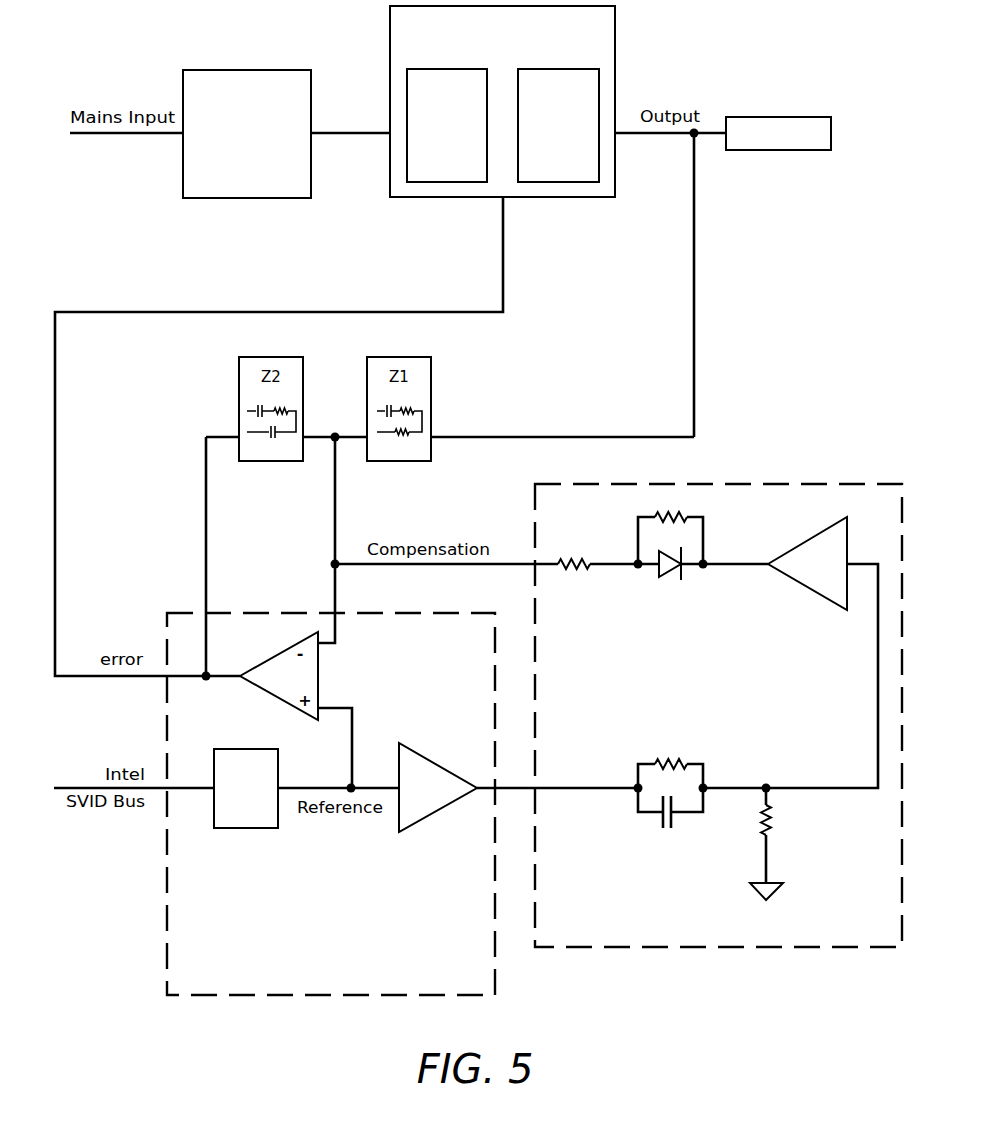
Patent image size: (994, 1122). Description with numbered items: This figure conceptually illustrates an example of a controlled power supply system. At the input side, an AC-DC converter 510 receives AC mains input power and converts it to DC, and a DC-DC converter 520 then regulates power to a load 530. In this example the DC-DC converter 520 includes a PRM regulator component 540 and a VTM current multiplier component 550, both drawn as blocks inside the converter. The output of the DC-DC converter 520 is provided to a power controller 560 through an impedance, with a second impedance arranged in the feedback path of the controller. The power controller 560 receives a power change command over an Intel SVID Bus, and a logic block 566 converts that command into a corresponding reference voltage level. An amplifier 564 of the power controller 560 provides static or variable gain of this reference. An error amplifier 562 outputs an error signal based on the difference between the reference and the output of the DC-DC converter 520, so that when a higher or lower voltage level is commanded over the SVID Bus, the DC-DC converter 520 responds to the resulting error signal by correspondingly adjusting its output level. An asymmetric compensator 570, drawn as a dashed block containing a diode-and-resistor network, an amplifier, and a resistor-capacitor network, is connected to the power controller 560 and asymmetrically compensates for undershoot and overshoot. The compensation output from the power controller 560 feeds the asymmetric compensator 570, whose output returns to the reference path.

The AC-DC converter 510 is at (247, 134).
The DC-DC converter 520 is at (502, 101).
The load 530 is at (778, 133).
The PRM regulator component 540 is at (447, 125).
The VTM current multiplier component 550 is at (558, 125).
The power controller 560 is at (331, 804).
The error amplifier 562 is at (265, 698).
The amplifier 564 is at (437, 825).
The logic block 566 is at (246, 788).
The asymmetric compensator 570 is at (718, 715).